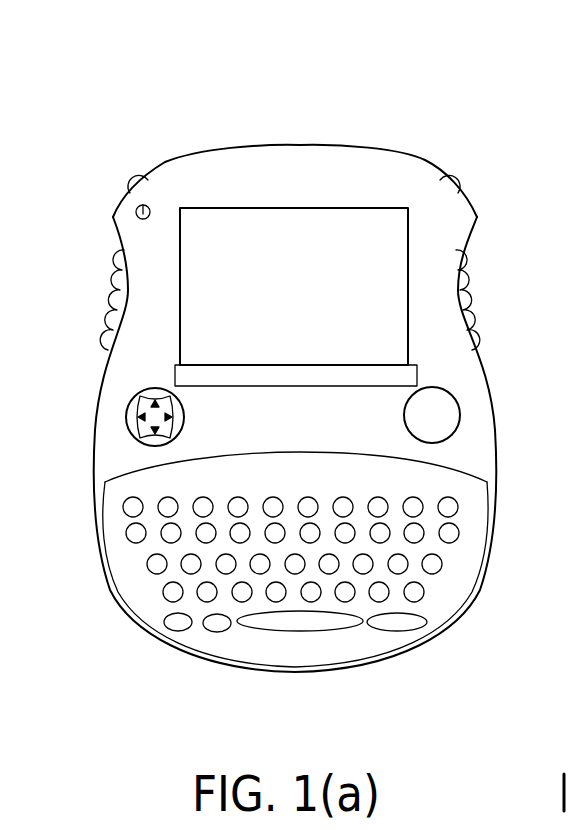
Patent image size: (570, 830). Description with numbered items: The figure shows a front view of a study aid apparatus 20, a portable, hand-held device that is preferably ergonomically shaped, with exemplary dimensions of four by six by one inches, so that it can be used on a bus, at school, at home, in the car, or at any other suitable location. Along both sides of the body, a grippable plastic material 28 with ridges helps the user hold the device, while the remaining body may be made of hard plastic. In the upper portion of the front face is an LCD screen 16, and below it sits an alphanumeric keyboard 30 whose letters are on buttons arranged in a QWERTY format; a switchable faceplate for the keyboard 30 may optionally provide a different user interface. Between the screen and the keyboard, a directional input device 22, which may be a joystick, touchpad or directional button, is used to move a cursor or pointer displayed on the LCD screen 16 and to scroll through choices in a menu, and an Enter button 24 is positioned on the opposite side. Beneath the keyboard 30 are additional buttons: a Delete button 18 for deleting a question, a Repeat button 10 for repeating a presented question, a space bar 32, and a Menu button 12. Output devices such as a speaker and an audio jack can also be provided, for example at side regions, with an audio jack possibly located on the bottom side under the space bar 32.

The study aid apparatus 20 is at (294, 80).
The LCD screen 16 is at (378, 225).
The grippable plastic material 28 is at (115, 310).
The directional input device 22 is at (128, 415).
The Enter button 24 is at (461, 408).
The alphanumeric keyboard 30 is at (126, 540).
The Delete button 18 is at (168, 631).
The Repeat button 10 is at (217, 633).
The space bar 32 is at (356, 632).
The Menu button 12 is at (433, 631).